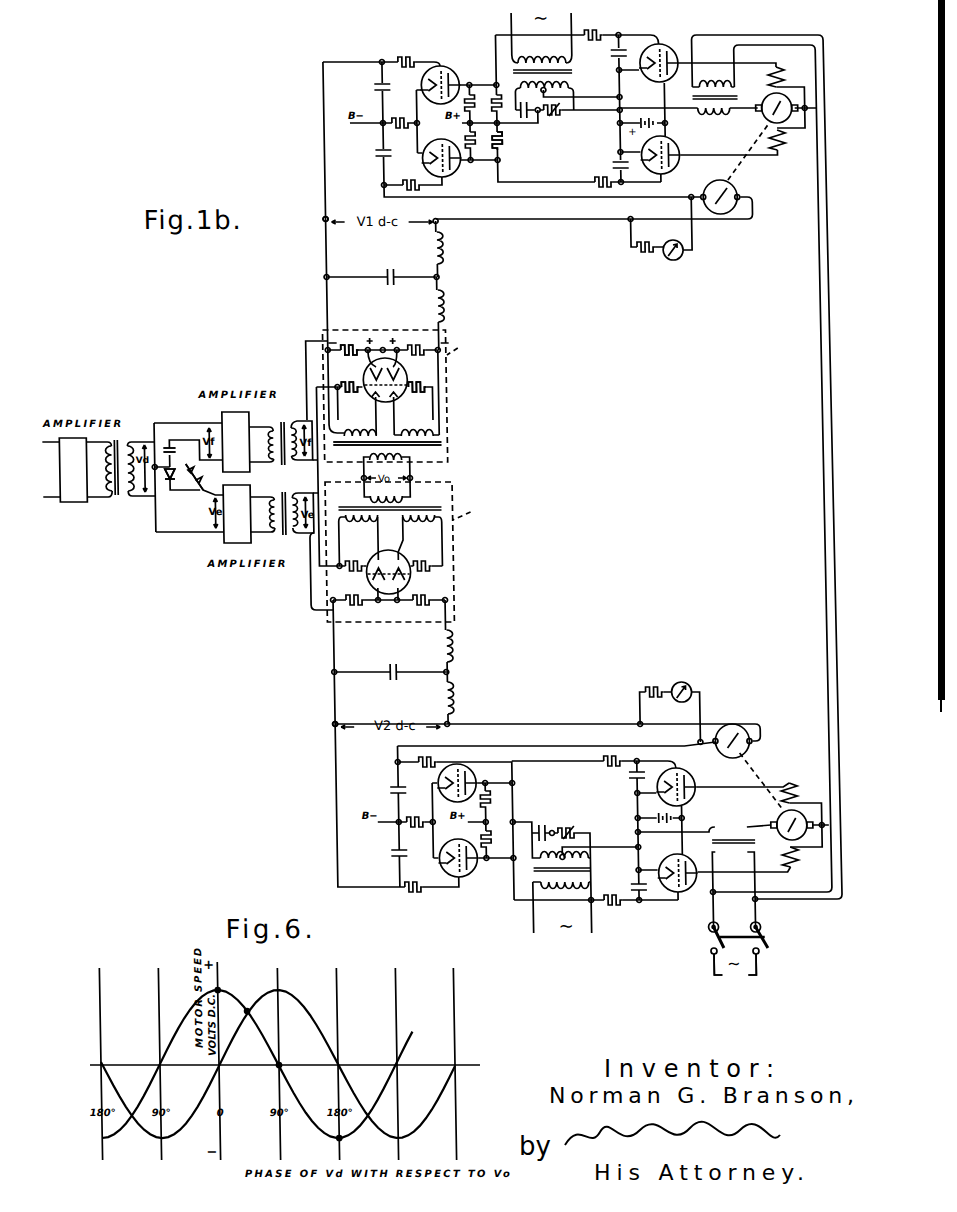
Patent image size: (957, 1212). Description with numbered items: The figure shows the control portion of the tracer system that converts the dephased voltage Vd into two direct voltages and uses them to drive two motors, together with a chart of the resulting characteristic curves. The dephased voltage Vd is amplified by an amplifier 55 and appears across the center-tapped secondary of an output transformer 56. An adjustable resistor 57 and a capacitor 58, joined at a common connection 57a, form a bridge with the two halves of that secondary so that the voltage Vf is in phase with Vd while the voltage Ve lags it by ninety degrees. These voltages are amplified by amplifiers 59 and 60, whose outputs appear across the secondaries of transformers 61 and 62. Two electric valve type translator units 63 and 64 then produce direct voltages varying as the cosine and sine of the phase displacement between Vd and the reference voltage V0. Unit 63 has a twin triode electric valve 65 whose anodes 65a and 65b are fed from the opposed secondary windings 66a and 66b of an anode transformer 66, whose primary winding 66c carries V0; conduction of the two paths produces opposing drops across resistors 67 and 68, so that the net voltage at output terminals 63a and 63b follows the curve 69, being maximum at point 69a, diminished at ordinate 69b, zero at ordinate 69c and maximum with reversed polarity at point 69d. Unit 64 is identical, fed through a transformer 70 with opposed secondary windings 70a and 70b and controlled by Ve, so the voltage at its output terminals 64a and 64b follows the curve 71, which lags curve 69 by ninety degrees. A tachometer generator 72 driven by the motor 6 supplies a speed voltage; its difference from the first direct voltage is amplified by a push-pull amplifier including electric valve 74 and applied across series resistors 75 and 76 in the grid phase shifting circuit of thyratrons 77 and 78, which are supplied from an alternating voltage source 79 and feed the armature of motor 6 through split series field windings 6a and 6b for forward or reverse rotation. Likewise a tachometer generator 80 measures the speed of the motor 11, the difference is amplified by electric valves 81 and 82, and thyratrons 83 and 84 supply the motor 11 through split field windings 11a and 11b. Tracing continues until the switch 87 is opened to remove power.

In FIG. 1B, the motor 6 is at (769, 101).
In FIG. 1B, the split series field winding 6a is at (781, 66).
In FIG. 1B, the split series field winding 6b is at (781, 152).
In FIG. 1B, the motor 11 is at (772, 821).
In FIG. 1B, the split field winding 11a is at (795, 785).
In FIG. 1B, the split field winding 11b is at (791, 870).
In FIG. 1B, the amplifier 55 is at (73, 470).
In FIG. 1B, the output transformer 56 is at (119, 497).
In FIG. 1B, the adjustable resistor 57 is at (194, 488).
In FIG. 1B, the common connection 57a is at (162, 464).
In FIG. 1B, the capacitor 58 is at (178, 446).
In FIG. 1B, the amplifier 59 is at (236, 442).
In FIG. 1B, the amplifier 60 is at (237, 514).
In FIG. 1B, the amplifier output transformer 61 is at (277, 420).
In FIG. 1B, the amplifier output transformer 62 is at (277, 492).
In FIG. 1B, the electric valve type translator unit 63 is at (398, 396).
In FIG. 1B, the output terminal 63a is at (308, 223).
In FIG. 1B, the output terminal 63b is at (446, 226).
In FIG. 1B, the electric valve type translator unit 64 is at (406, 552).
In FIG. 1B, the output terminal 64a is at (317, 727).
In FIG. 1B, the output terminal 64b is at (447, 723).
In FIG. 1B, the twin triode electric valve 65 is at (400, 375).
In FIG. 1B, the anode 65a is at (347, 395).
In FIG. 1B, the anode 65b is at (415, 395).
In FIG. 1B, the anode transformer 66 is at (410, 462).
In FIG. 1B, the secondary winding 66a is at (352, 447).
In FIG. 1B, the secondary winding 66b is at (424, 447).
In FIG. 1B, the primary winding 66c is at (372, 460).
In FIG. 1B, the resistor 67 is at (354, 346).
In FIG. 1B, the resistor 68 is at (421, 346).
In FIG. 6, the curve 69 is at (199, 1008).
In FIG. 6, the point 69a is at (222, 990).
In FIG. 6, the ordinate 69b is at (248, 1014).
In FIG. 6, the zero ordinate 69c is at (282, 1063).
In FIG. 6, the point 69d is at (341, 1140).
In FIG. 1B, the transformer 70 is at (412, 501).
In FIG. 1B, the secondary winding 70a is at (359, 528).
In FIG. 1B, the secondary winding 70b is at (417, 528).
In FIG. 6, the curve 71 is at (318, 996).
In FIG. 1B, the tachometer generator 72 is at (718, 185).
In FIG. 1B, the electric valve 74 is at (444, 144).
In FIG. 1B, the resistor 75 is at (459, 73).
In FIG. 1B, the resistor 76 is at (507, 140).
In FIG. 1B, the thyratron 77 is at (668, 46).
In FIG. 1B, the thyratron 78 is at (680, 143).
In FIG. 1B, the alternating voltage source 79 is at (735, 974).
In FIG. 1B, the tachometer generator 80 is at (729, 750).
In FIG. 1B, the electric valve 81 is at (473, 780).
In FIG. 1B, the electric valve 82 is at (451, 852).
In FIG. 1B, the thyratron 83 is at (680, 769).
In FIG. 1B, the thyratron 84 is at (665, 858).
In FIG. 1B, the switch 87 is at (766, 931).